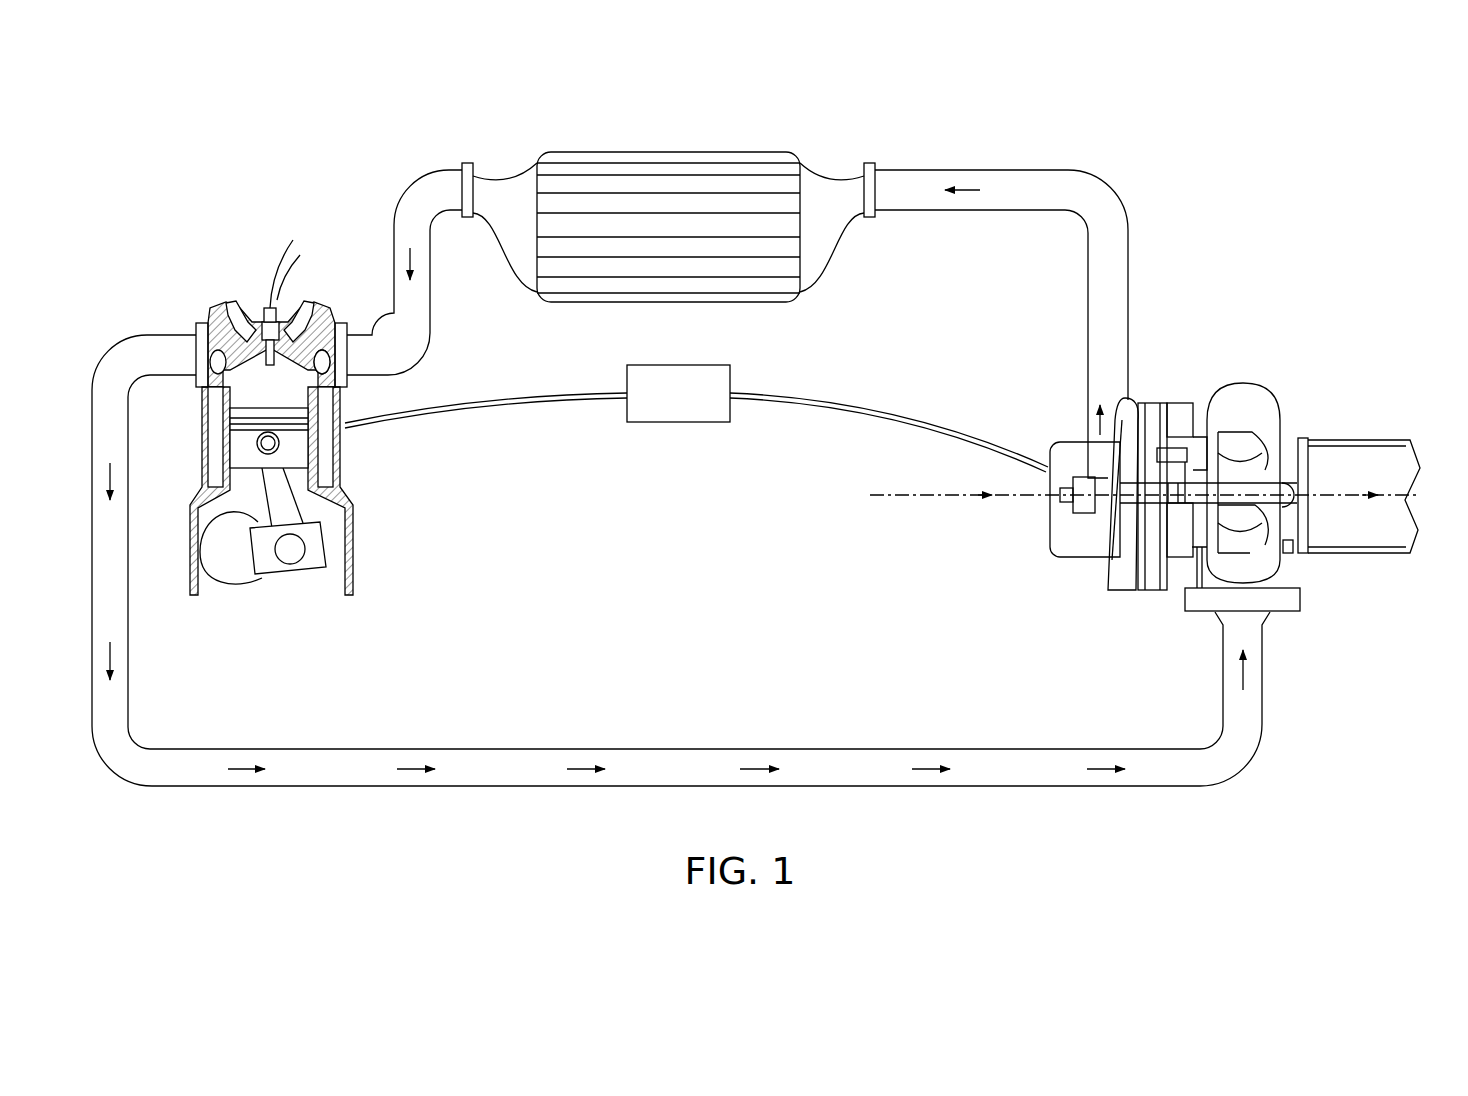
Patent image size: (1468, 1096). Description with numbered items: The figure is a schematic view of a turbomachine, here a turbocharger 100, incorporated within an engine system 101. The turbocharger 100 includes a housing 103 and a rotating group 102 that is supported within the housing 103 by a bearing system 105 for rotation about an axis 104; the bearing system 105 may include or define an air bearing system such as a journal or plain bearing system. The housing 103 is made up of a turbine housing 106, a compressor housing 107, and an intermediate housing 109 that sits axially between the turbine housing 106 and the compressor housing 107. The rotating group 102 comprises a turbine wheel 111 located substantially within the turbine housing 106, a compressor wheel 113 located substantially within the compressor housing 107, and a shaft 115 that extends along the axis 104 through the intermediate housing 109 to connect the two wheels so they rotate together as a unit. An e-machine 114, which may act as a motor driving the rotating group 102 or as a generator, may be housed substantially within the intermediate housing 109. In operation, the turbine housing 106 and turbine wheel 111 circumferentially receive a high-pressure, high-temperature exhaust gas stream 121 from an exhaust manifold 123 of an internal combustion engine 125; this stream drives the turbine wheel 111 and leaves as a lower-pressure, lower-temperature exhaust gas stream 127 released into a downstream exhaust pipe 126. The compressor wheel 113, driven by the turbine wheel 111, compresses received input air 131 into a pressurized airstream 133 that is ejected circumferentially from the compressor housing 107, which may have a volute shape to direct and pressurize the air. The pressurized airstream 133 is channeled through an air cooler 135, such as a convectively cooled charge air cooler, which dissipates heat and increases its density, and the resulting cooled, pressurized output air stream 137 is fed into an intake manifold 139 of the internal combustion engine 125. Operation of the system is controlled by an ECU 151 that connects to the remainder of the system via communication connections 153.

The turbocharger 100 is at (1164, 422).
The engine system 101 is at (775, 423).
The rotating group 102 is at (1146, 506).
The housing 103 is at (1150, 395).
The axis 104 is at (1412, 497).
The bearing system 105 is at (1176, 506).
The turbine housing 106 is at (1268, 415).
The compressor housing 107 is at (1085, 557).
The intermediate housing 109 is at (1170, 440).
The turbine wheel 111 is at (1258, 480).
The compressor wheel 113 is at (1098, 505).
The e-machine 114 is at (1180, 455).
The shaft 115 is at (1195, 490).
The exhaust gas stream 121 is at (768, 766).
The exhaust manifold 123 is at (213, 330).
The internal combustion engine 125 is at (302, 457).
The downstream exhaust pipe 126 is at (1364, 438).
The lower-pressure exhaust gas stream 127 is at (1348, 498).
The input air 131 is at (956, 498).
The pressurized airstream 133 is at (1090, 416).
The air cooler 135 is at (670, 174).
The output air stream 137 is at (404, 262).
The intake manifold 139 is at (338, 366).
The ECU 151 is at (679, 424).
The communication connections 153 is at (818, 408).